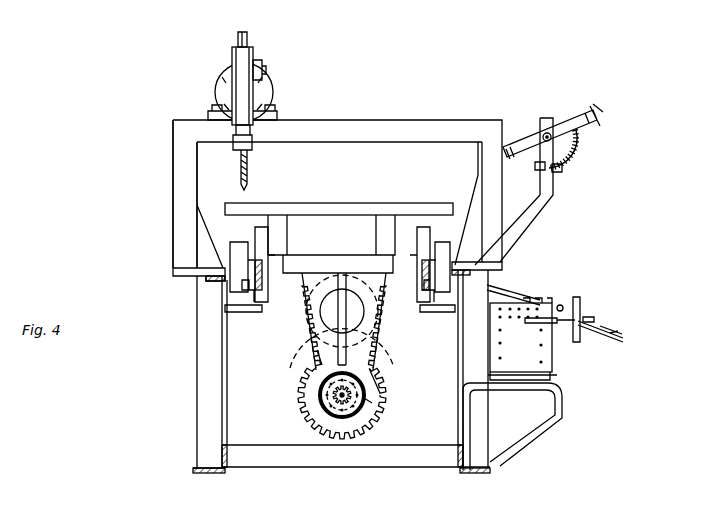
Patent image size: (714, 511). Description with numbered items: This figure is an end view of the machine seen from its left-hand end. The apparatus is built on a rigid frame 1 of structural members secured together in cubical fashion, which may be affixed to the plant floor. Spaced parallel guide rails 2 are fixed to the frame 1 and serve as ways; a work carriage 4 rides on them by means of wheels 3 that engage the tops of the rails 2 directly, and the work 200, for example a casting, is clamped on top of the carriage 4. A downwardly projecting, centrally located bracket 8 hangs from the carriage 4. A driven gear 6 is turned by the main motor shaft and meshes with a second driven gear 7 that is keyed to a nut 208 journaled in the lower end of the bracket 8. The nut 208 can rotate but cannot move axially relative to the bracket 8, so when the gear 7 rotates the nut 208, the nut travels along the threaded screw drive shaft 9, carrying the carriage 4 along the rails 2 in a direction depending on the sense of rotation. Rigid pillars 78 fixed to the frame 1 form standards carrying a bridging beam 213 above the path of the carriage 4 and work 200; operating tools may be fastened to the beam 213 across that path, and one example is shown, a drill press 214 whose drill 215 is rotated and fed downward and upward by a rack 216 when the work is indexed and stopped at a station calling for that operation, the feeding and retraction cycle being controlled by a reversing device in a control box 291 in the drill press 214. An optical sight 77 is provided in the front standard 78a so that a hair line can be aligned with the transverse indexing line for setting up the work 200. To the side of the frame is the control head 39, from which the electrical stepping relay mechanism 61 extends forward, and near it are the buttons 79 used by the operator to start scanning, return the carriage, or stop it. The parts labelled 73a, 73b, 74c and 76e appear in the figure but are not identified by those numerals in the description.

The rigid frame 1 is at (205, 426).
The guide rails 2 is at (258, 300).
The wheels 3 is at (425, 225).
The work carriage 4 is at (380, 215).
The driven gear 6 is at (302, 310).
The driven gear 7 is at (300, 399).
The bracket 8 is at (318, 355).
The threaded screw drive shaft 9 is at (362, 400).
The control head 39 is at (555, 362).
The electrical stepping relay mechanism 61 is at (582, 336).
The lever arm 73a is at (634, 334).
The lever pivot 73b is at (614, 326).
The vertical plate 74c is at (586, 318).
The knob 76e is at (562, 305).
The optical sight 77 is at (578, 130).
The rigid pillars 78 is at (173, 178).
The front standard 78a is at (548, 128).
The buttons 79 is at (640, 336).
The work 200 is at (348, 203).
The nut 208 is at (326, 408).
The bridging beam 213 is at (380, 118).
The drill press 214 is at (254, 55).
The drill 215 is at (250, 174).
The rack 216 is at (258, 97).
The control box 291 is at (264, 70).